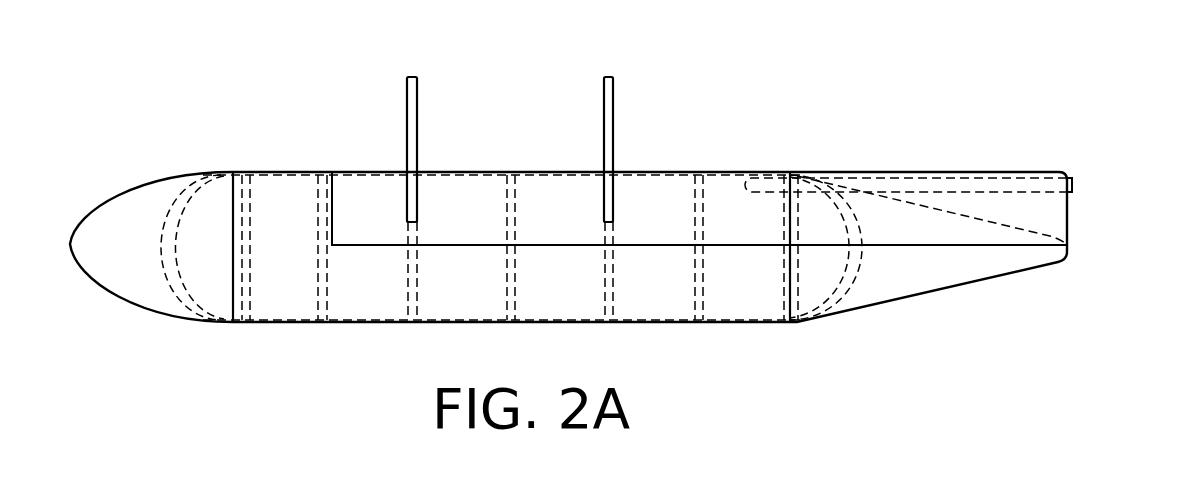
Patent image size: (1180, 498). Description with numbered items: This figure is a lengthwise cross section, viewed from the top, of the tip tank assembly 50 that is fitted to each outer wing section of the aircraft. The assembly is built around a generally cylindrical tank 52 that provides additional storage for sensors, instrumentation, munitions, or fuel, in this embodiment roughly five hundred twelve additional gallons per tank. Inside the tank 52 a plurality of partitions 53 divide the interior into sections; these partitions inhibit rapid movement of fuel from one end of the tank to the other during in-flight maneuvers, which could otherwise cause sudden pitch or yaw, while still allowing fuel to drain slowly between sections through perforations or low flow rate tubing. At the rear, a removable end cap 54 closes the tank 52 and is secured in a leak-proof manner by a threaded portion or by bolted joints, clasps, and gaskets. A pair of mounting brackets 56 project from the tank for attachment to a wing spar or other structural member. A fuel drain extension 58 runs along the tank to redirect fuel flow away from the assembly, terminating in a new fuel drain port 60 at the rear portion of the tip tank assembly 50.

The tip tank assembly 50 is at (193, 143).
The tank 52 is at (305, 182).
The partitions 53 is at (784, 295).
The removable end cap 54 is at (825, 285).
The mounting brackets 56 is at (416, 100).
The fuel drain extension 58 is at (950, 185).
The fuel drain port 60 is at (1073, 185).